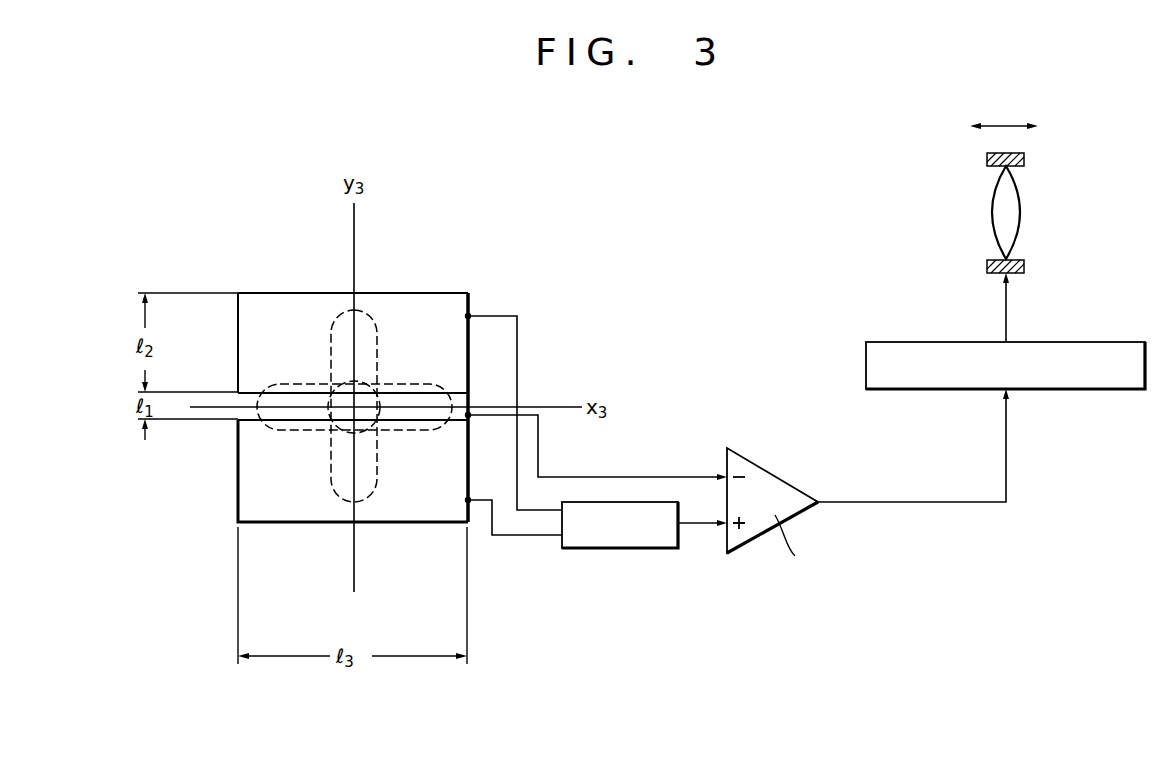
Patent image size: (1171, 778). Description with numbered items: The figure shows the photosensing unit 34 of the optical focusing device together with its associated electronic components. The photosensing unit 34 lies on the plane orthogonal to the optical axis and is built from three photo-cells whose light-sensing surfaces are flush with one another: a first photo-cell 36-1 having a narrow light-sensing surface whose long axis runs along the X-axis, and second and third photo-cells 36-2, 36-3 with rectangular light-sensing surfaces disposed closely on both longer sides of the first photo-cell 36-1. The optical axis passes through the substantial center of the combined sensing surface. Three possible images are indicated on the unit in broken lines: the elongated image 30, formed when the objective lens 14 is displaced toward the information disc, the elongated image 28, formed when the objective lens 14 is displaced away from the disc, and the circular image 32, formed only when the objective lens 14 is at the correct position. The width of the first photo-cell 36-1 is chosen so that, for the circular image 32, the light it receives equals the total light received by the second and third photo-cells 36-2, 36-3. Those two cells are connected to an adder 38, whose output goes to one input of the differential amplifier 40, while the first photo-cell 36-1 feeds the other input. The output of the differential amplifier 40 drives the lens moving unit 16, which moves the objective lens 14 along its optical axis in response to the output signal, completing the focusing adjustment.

The objective lens 14 is at (1010, 203).
The lens moving unit 16 is at (1110, 350).
The projected image 28 is at (378, 470).
The projected image 30 is at (372, 310).
The circular image 32 is at (323, 437).
The photosensing unit 34 is at (323, 403).
The first photo-cell 36-1 is at (240, 412).
The second photo-cell 36-2 is at (264, 300).
The third photo-cell 36-3 is at (283, 520).
The adder 38 is at (658, 538).
The differential amplifier 40 is at (773, 490).